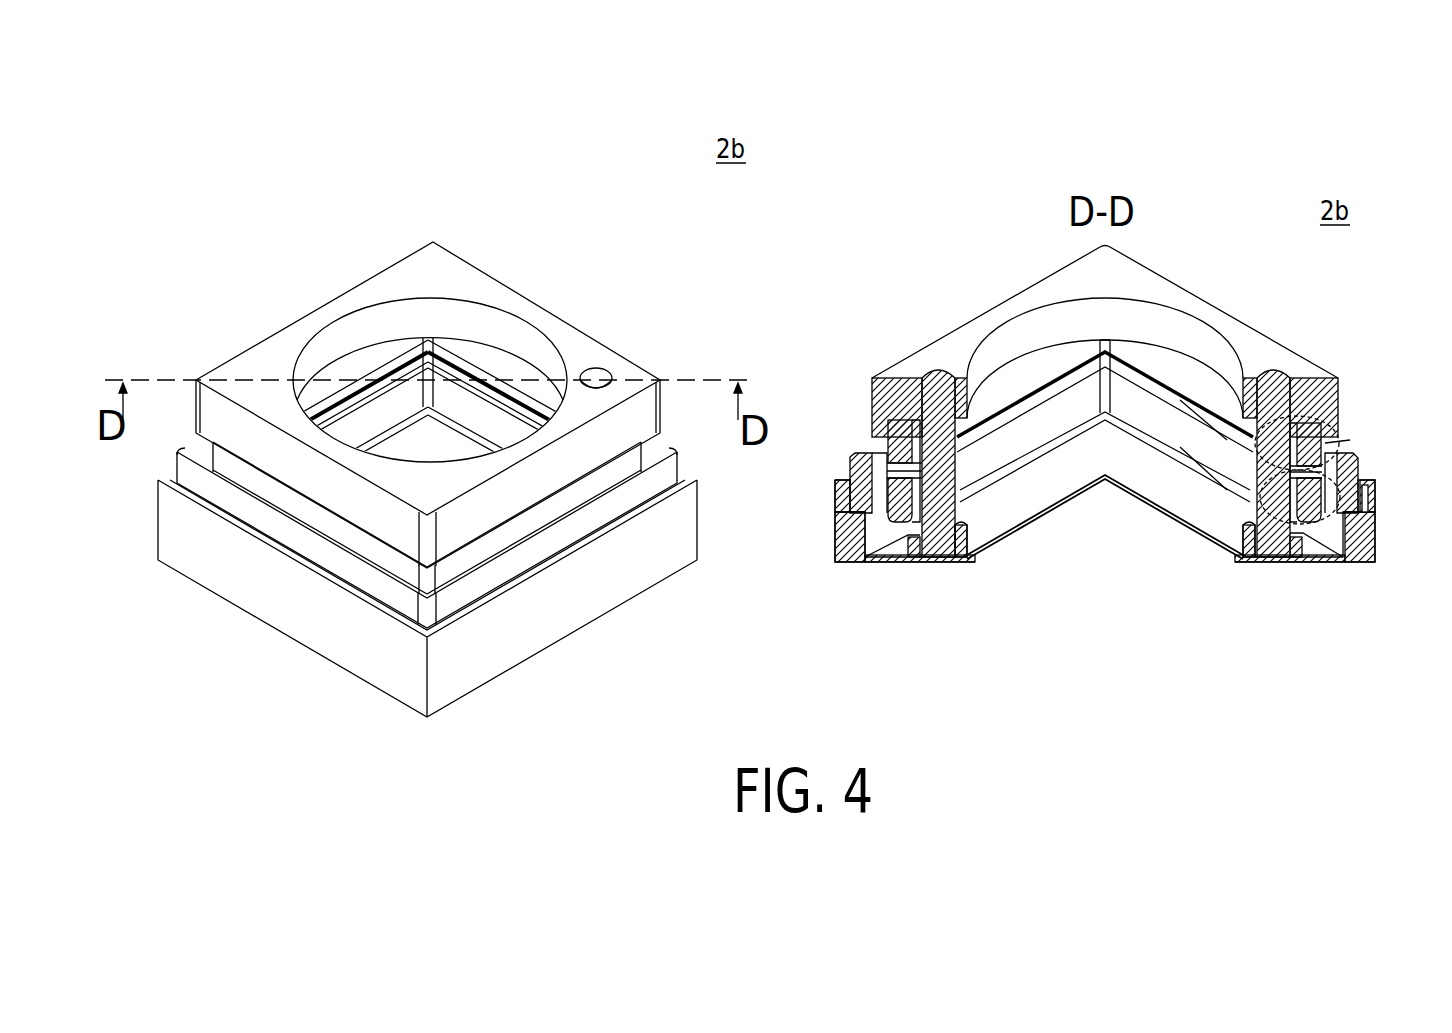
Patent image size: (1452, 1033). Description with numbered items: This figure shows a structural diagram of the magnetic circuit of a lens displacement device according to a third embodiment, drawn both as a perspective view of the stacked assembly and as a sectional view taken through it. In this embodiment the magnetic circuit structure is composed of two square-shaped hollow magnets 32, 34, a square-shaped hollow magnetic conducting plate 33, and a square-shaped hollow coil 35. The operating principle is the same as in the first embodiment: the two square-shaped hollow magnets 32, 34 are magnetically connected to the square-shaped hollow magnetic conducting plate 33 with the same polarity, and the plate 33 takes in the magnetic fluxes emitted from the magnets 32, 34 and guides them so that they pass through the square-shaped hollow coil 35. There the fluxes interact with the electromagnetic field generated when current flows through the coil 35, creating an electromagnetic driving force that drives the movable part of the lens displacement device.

The square-shaped hollow magnet 32 is at (482, 417).
The square-shaped hollow magnetic conducting plate 33 is at (448, 360).
The square-shaped hollow magnet 34 is at (378, 360).
The square-shaped hollow coil 35 is at (556, 548).